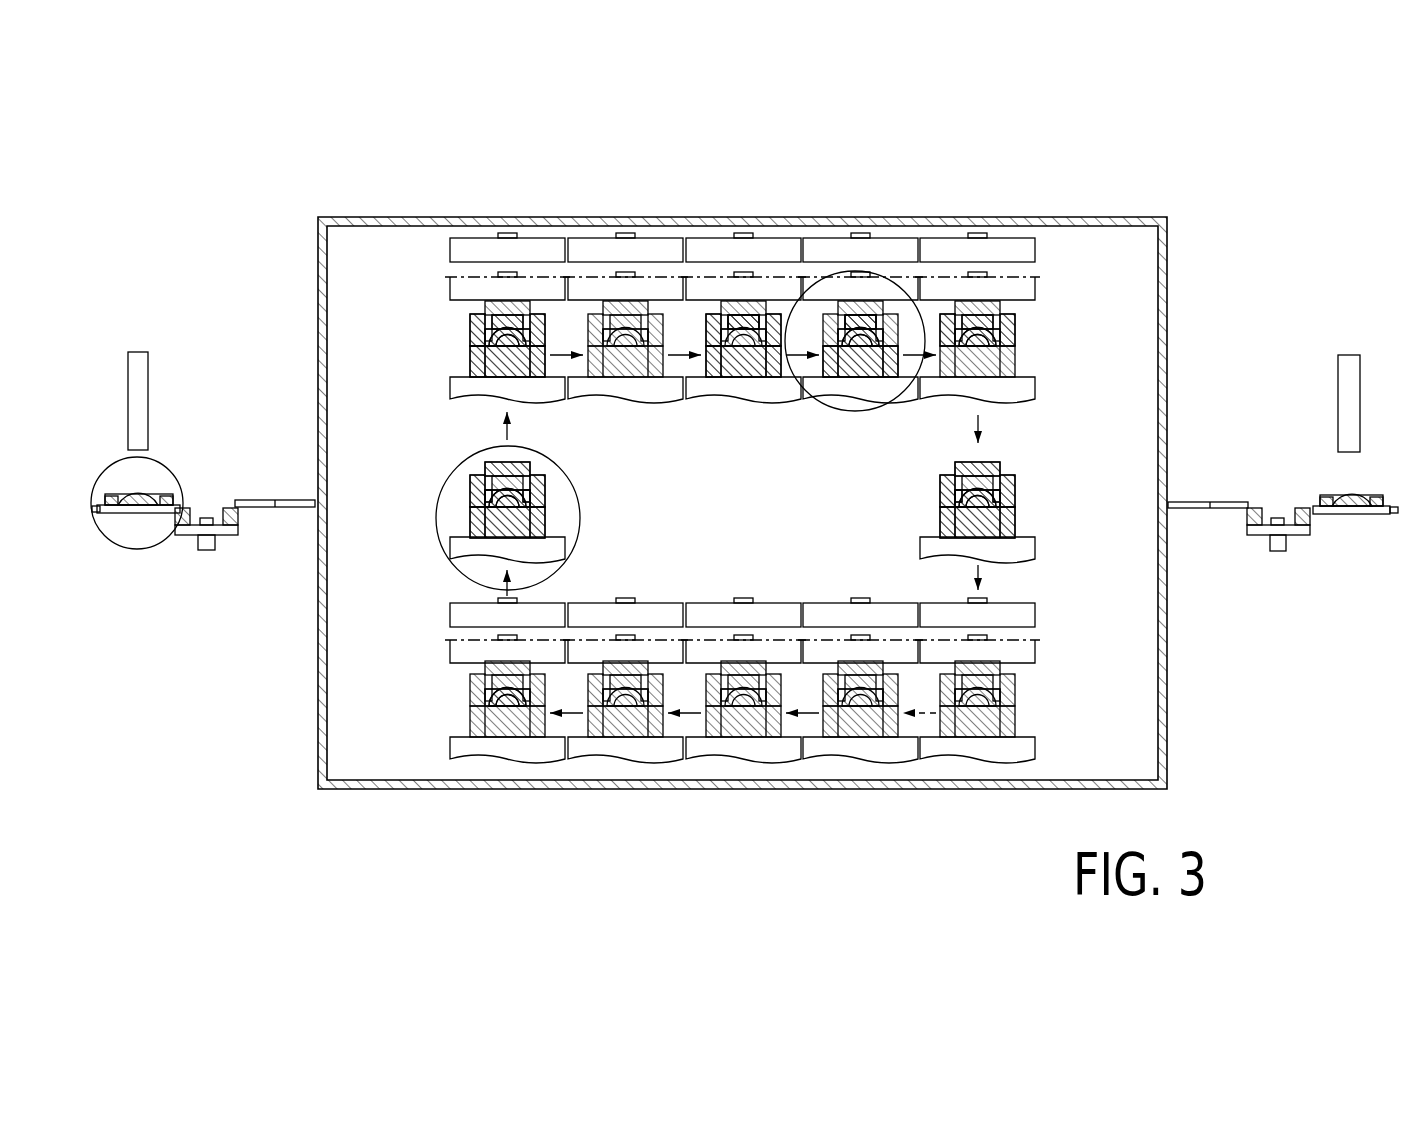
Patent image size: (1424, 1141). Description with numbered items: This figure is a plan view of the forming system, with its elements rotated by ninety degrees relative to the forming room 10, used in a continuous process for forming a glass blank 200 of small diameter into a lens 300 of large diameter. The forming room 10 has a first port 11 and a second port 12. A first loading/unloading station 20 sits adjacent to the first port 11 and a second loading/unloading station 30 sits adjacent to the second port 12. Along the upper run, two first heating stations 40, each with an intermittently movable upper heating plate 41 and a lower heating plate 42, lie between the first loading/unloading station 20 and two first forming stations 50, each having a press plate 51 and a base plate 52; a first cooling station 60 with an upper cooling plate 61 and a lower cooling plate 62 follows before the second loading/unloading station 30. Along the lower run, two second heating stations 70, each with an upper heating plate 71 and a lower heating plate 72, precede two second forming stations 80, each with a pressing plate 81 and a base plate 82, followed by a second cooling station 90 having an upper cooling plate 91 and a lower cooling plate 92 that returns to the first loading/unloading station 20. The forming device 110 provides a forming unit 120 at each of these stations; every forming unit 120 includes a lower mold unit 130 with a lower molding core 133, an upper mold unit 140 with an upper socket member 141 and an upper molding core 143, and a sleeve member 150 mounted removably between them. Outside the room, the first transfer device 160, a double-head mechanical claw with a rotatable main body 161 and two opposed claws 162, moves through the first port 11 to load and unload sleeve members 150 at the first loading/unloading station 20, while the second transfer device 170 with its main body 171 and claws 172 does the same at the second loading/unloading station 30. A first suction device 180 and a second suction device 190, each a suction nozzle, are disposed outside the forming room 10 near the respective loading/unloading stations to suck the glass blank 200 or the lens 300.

The forming room 10 is at (1152, 216).
The first port 11 is at (323, 572).
The second port 12 is at (1163, 566).
The first loading/unloading station 20 is at (450, 549).
The second loading/unloading station 30 is at (1036, 552).
The first heating station 40 is at (473, 322).
The upper heating plate 41 is at (462, 250).
The lower heating plate 42 is at (450, 393).
The first forming station 50 is at (802, 335).
The press plate 51 is at (728, 250).
The base plate 52 is at (712, 398).
The first cooling station 60 is at (1079, 271).
The upper cooling plate 61 is at (1005, 250).
The lower cooling plate 62 is at (1037, 372).
The second heating station 70 is at (955, 735).
The upper heating plate 71 is at (1020, 610).
The lower heating plate 72 is at (866, 762).
The second forming station 80 is at (684, 702).
The pressing plate 81 is at (777, 605).
The base plate 82 is at (712, 762).
The second cooling station 90 is at (461, 735).
The upper cooling plate 91 is at (455, 612).
The lower cooling plate 92 is at (472, 762).
The forming device 110 is at (455, 352).
The forming unit 120 is at (466, 328).
The lower mold unit 130 is at (468, 525).
The lower molding core 133 is at (740, 390).
The upper mold unit 140 is at (470, 468).
The upper socket member 141 is at (706, 322).
The upper molding core 143 is at (520, 312).
The sleeve member 150 is at (540, 512).
The first transfer device 160 is at (218, 515).
The main body 161 is at (200, 540).
The claw 162 is at (100, 500).
The second transfer device 170 is at (1290, 520).
The main body 171 is at (1297, 537).
The claw 172 is at (1196, 502).
The first suction device 180 is at (138, 345).
The second suction device 190 is at (1350, 347).
The glass blank 200 is at (497, 330).
The lens 300 is at (850, 330).